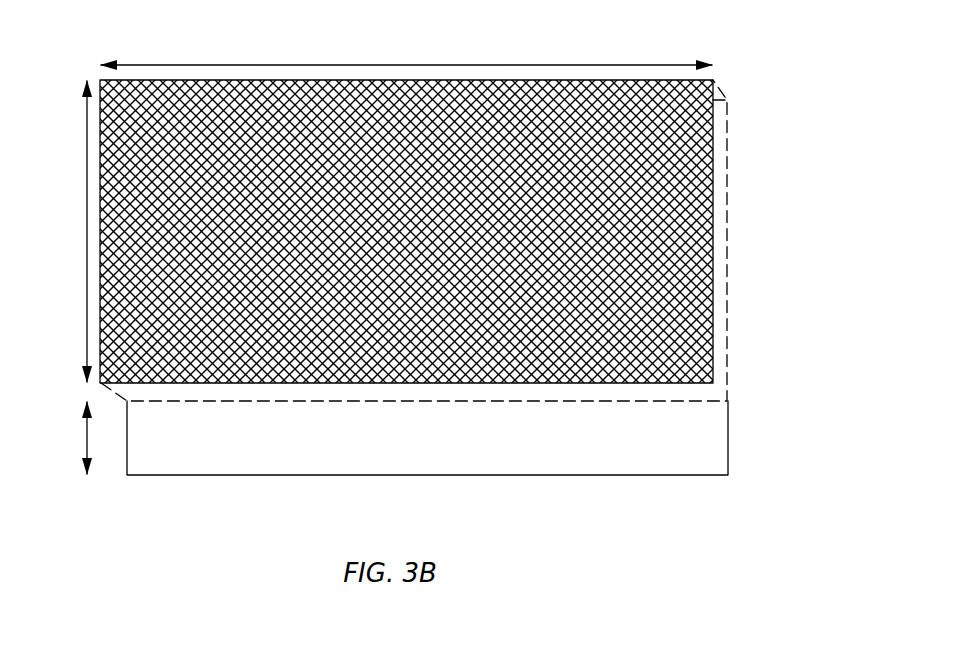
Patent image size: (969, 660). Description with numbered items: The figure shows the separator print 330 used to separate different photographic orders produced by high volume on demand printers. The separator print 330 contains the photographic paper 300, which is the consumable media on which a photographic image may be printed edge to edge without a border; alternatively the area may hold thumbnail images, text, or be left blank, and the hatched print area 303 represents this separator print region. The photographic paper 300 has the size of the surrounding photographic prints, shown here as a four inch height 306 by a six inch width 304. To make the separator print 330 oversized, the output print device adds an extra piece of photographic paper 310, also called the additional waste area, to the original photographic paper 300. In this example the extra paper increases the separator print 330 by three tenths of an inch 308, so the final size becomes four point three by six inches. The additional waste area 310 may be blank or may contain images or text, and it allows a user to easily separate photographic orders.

The photographic paper 300 is at (727, 288).
The porous conductive layer 303 is at (692, 215).
The 6-inch dimension 304 is at (406, 51).
The 4-inch dimension 306 is at (57, 231).
The 0.3-inch increase 308 is at (60, 438).
The extra piece of photographic paper 310 is at (277, 475).
The separator print 330 is at (792, 105).